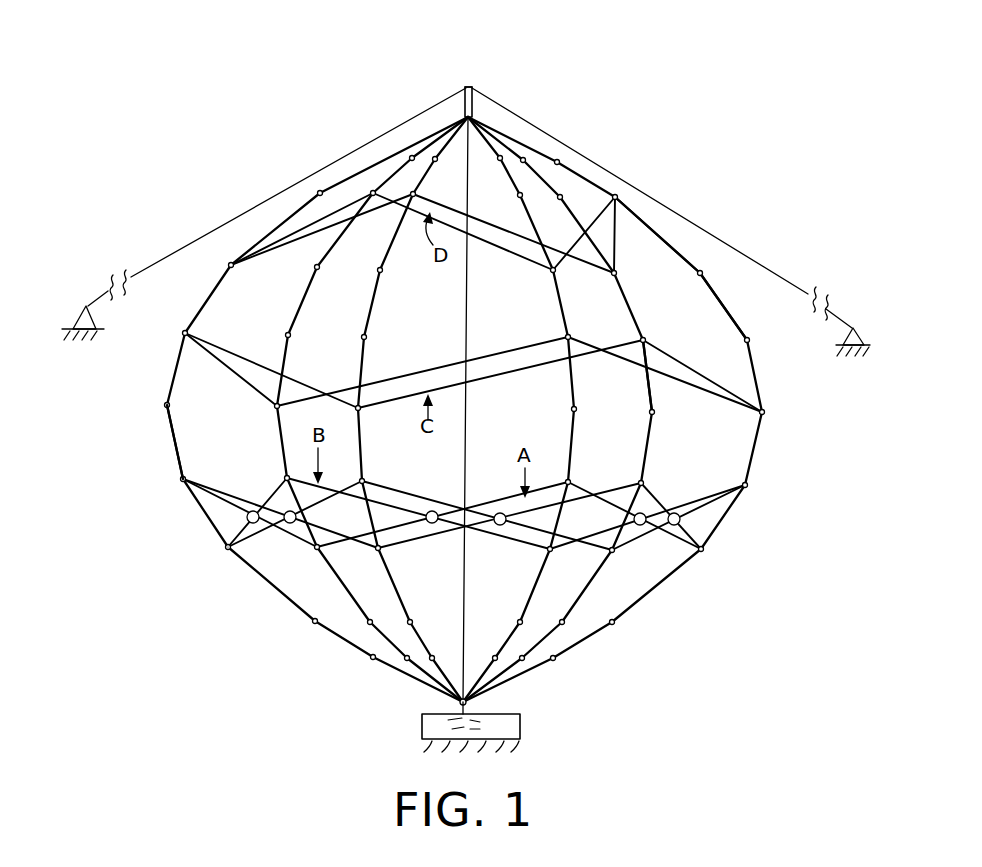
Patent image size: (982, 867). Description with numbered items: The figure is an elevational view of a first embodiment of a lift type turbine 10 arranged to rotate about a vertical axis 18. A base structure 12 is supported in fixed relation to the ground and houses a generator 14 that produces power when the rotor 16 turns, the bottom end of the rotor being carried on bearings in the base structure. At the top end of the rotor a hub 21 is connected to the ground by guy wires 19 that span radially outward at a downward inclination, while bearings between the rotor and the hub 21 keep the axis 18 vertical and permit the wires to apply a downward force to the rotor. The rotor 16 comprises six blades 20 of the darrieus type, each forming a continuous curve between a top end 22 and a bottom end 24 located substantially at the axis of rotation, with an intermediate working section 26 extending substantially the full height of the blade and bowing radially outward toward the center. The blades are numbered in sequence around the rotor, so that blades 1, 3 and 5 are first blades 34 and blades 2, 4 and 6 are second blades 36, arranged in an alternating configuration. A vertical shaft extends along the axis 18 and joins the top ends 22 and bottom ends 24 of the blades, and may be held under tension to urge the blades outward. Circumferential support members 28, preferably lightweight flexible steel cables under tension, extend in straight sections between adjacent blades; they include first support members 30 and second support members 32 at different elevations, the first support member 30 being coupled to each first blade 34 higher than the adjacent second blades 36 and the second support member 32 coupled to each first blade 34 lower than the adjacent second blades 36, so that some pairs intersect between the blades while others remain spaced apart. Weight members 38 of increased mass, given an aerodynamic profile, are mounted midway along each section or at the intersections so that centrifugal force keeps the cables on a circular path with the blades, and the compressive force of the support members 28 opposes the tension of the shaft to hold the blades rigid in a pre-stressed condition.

The turbine 10 is at (256, 70).
The base structure 12 is at (520, 731).
The generator 14 is at (447, 723).
The rotor 16 is at (641, 203).
The vertical axis of rotation 18 is at (469, 176).
The guy wires 19 is at (220, 224).
The blades 20 is at (684, 256).
The hub 21 is at (473, 88).
The top end 22 is at (463, 115).
The bottom end 24 is at (455, 702).
The working section 26 is at (163, 443).
The support members 28 is at (287, 548).
The first support members 30 is at (343, 205).
The second support members 32 is at (240, 360).
The first blades 34 is at (302, 292).
The second blades 36 is at (188, 331).
The weight members 38 is at (247, 519).
The blade one 1 is at (303, 293).
The blade two 2 is at (556, 293).
The blade three 3 is at (728, 298).
The blade four 4 is at (631, 293).
The blade five 5 is at (372, 291).
The blade six 6 is at (200, 290).